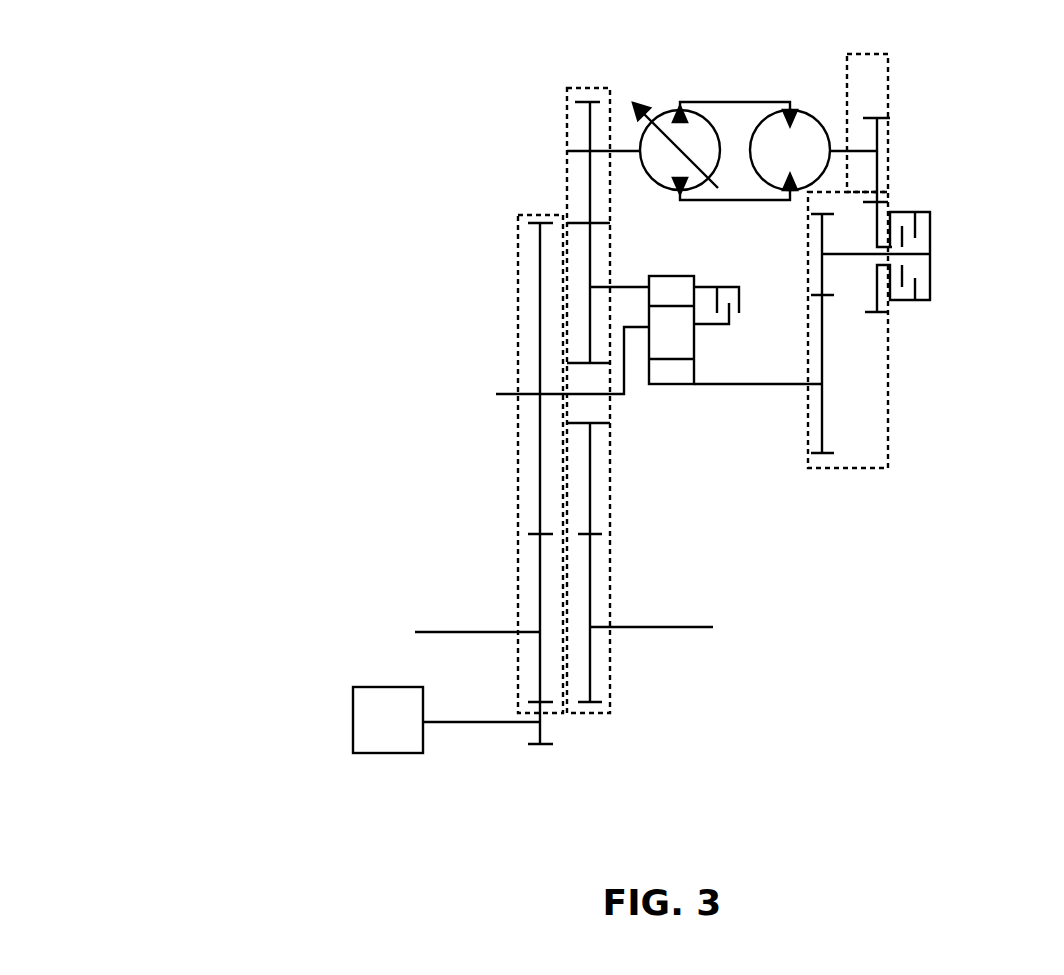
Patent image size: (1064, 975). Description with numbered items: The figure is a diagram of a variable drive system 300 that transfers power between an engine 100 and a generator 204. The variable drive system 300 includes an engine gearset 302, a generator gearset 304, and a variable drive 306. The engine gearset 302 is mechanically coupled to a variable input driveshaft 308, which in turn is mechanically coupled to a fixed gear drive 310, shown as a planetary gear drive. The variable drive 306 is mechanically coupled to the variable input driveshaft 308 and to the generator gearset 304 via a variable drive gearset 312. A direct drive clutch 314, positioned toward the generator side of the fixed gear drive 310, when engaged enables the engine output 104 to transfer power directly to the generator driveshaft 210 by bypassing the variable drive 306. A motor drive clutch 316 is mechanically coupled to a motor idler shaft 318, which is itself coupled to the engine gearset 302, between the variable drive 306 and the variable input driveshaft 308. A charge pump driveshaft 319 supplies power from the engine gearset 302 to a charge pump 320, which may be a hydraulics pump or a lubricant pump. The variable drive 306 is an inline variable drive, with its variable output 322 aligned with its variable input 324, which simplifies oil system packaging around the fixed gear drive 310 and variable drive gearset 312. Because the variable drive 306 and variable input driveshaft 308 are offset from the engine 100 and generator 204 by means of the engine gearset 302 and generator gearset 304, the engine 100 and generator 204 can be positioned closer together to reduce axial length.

The variable drive system 300 is at (180, 82).
The engine gearset 302 is at (518, 465).
The generator gearset 304 is at (611, 470).
The variable drive 306 is at (738, 64).
The variable input driveshaft 308 is at (497, 394).
The fixed gear drive 310 is at (675, 276).
The variable drive gearset 312 is at (567, 115).
The direct drive clutch 314 is at (739, 287).
The motor drive clutch 316 is at (932, 265).
The motor idler shaft 318 is at (850, 255).
The charge pump driveshaft 319 is at (462, 722).
The charge pump 320 is at (353, 722).
The variable output 322 is at (840, 150).
The variable input 324 is at (638, 150).
The engine output 104 is at (415, 632).
The generator driveshaft 210 is at (685, 627).
The engine 100 is at (345, 659).
The generator 204 is at (770, 653).